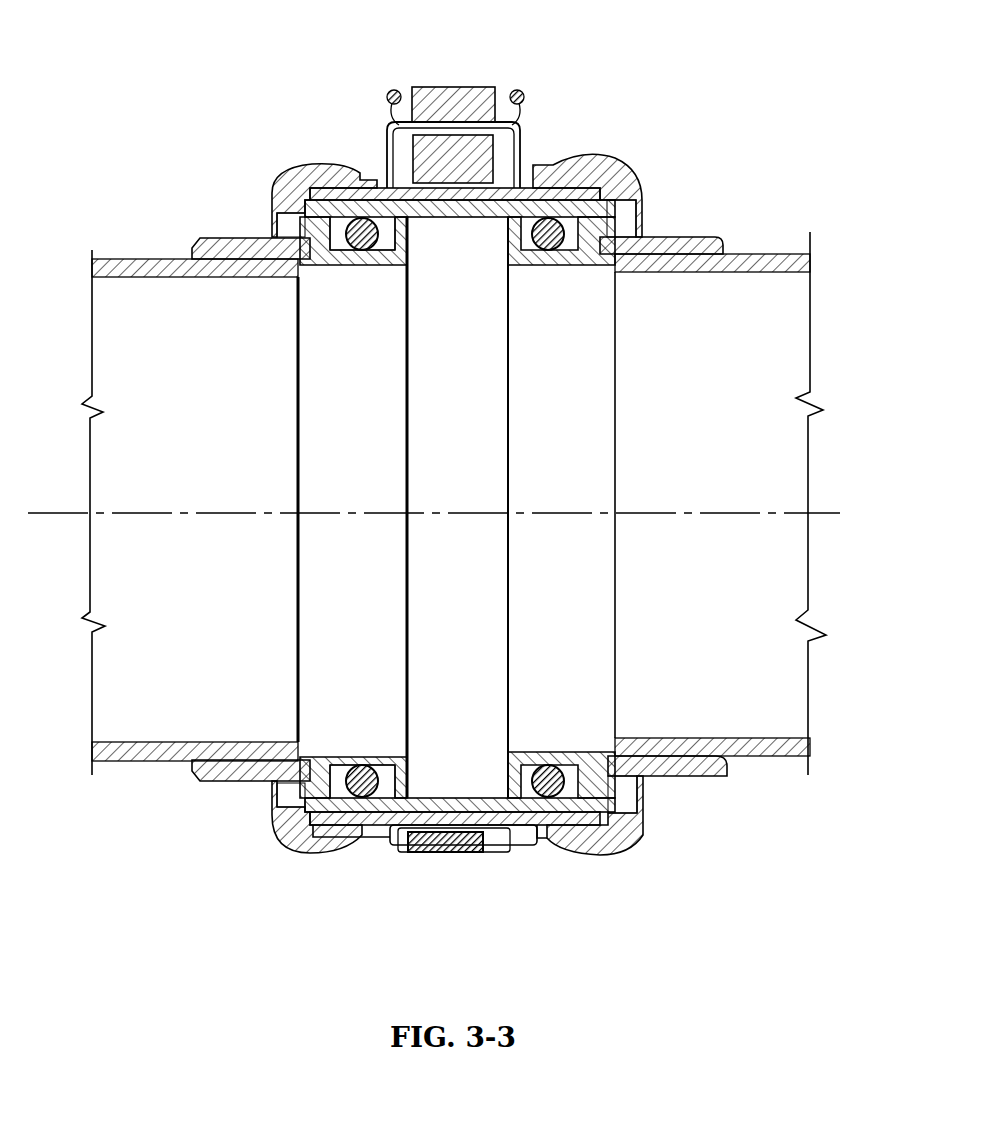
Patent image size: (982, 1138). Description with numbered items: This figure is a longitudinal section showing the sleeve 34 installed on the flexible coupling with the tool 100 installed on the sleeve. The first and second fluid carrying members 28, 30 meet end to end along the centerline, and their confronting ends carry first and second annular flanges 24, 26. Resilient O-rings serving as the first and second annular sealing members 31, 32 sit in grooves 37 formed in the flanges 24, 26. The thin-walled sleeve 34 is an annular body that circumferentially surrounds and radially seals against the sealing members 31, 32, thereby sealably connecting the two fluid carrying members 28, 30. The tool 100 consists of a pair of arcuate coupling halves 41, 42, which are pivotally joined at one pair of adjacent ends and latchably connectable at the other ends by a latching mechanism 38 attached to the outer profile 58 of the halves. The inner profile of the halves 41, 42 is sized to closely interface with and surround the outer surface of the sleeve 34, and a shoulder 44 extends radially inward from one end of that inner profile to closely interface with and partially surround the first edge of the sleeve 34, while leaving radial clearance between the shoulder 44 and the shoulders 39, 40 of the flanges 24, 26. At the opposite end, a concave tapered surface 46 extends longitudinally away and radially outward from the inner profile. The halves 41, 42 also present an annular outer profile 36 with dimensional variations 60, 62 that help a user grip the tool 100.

The tool 100 is at (258, 150).
The first annular flange 24 is at (218, 238).
The second annular flange 26 is at (702, 236).
The first fluid carrying member 28 is at (123, 258).
The second fluid carrying member 30 is at (768, 256).
The first annular sealing member 31 is at (376, 250).
The second annular sealing member 32 is at (559, 250).
The sleeve 34 is at (431, 217).
The annular outer profile 36 is at (655, 168).
The grooves 37 is at (343, 848).
The latching mechanism 38 is at (466, 70).
The shoulder of the first annular flange 39 is at (318, 853).
The shoulder of the second annular flange 40 is at (512, 802).
The arcuate coupling half 41 is at (633, 846).
The arcuate coupling half 42 is at (607, 190).
The shoulder 44 is at (325, 222).
The tapered surface 46 is at (624, 212).
The outer profile 58 is at (470, 188).
The dimensional variation 60 is at (357, 170).
The dimensional variation 62 is at (556, 165).